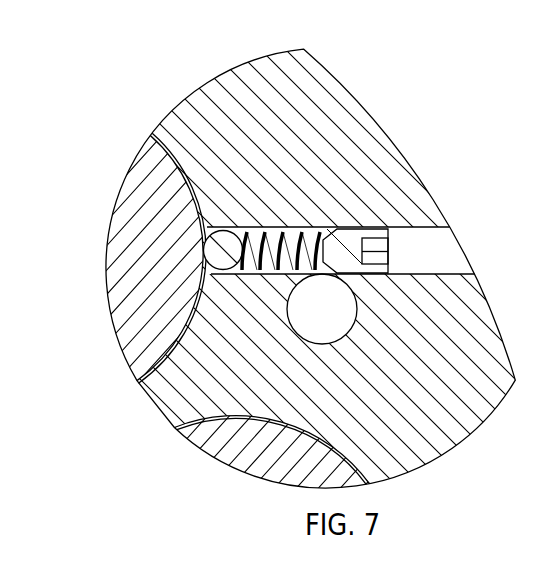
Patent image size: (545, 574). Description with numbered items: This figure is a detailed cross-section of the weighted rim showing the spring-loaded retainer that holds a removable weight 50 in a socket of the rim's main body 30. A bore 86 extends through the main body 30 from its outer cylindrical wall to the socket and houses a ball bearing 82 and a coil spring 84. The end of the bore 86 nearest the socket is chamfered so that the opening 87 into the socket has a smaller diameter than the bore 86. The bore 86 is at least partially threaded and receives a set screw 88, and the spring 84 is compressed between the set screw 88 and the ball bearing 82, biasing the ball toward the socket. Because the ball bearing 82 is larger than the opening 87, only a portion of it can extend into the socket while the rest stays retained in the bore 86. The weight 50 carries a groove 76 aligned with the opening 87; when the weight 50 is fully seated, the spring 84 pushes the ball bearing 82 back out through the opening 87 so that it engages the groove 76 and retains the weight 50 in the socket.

The main body 30 is at (162, 405).
The weight 50 is at (125, 340).
The groove 76 is at (150, 378).
The ball bearing 82 is at (210, 248).
The coil spring 84 is at (320, 236).
The bore 86 is at (452, 243).
The opening 87 is at (206, 258).
The set screw 88 is at (388, 268).